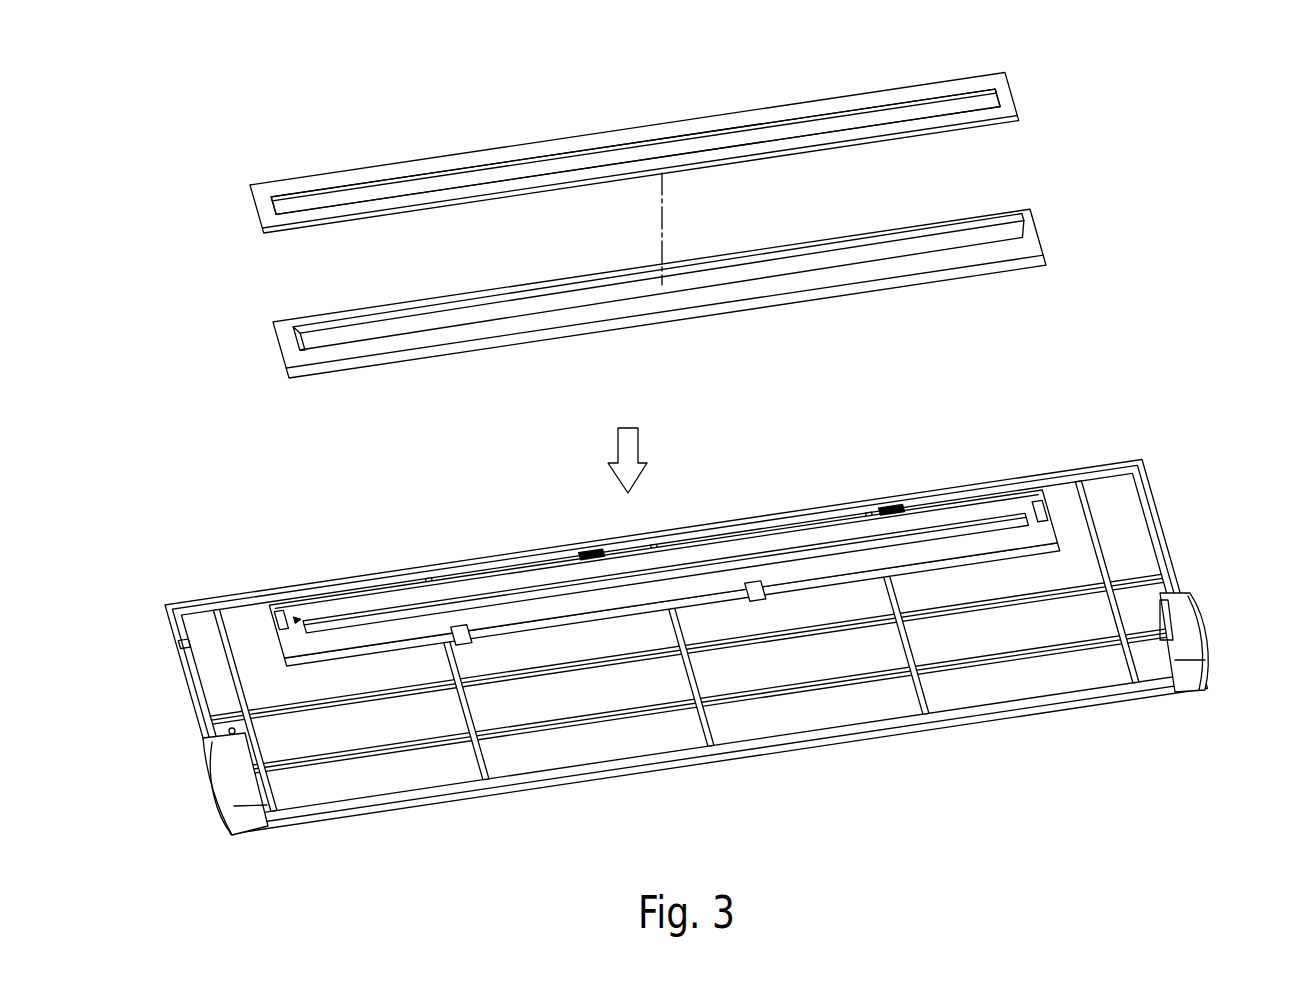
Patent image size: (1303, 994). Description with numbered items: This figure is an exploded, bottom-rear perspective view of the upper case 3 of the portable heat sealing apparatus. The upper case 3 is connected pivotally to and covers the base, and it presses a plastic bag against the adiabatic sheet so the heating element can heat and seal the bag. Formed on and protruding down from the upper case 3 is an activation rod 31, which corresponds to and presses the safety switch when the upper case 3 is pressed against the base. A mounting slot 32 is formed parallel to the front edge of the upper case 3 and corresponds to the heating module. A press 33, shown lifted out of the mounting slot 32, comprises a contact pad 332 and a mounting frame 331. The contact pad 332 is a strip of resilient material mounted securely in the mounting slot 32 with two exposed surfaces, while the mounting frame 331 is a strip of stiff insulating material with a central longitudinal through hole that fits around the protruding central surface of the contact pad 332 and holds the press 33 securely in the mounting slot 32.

The upper case 3 is at (1192, 441).
The activation rod 31 is at (228, 730).
The mounting slot 32 is at (278, 621).
The press 33 is at (270, 279).
The mounting frame 331 is at (1020, 92).
The contact pad 332 is at (1040, 233).